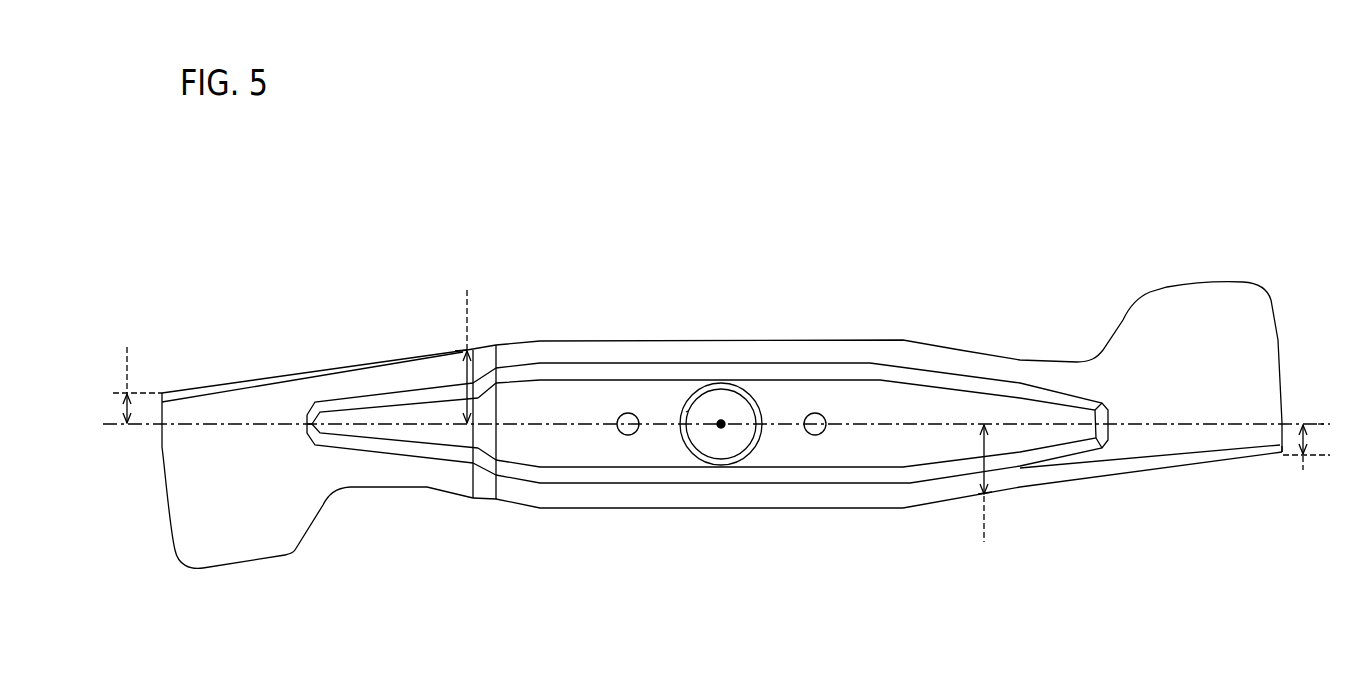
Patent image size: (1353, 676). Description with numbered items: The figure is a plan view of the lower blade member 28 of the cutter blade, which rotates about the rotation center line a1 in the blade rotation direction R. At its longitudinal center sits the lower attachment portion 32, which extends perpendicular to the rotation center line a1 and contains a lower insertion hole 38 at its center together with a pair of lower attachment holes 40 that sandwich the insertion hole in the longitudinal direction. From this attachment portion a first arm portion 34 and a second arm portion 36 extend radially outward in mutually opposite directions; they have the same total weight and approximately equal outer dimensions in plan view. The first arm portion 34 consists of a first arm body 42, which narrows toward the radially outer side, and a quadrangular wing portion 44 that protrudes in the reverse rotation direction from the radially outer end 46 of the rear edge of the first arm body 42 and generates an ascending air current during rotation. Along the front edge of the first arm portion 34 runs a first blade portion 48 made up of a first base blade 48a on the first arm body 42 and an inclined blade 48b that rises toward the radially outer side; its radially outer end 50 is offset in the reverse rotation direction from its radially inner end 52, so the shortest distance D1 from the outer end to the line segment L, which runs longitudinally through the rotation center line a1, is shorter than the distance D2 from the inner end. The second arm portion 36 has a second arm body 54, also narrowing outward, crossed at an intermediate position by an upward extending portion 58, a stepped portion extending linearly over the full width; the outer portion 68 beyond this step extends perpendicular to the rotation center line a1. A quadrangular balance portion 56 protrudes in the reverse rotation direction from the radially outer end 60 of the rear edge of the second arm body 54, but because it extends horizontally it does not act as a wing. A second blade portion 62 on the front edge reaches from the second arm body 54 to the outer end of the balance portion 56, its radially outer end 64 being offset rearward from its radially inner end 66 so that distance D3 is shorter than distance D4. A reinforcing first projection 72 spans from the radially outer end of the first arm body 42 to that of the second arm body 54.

The lower blade member 28 is at (232, 150).
The lower attachment portion 32 is at (817, 510).
The first arm portion 34 is at (945, 336).
The second arm portion 36 is at (427, 490).
The lower insertion hole 38 is at (695, 397).
The lower attachment holes 40 is at (627, 412).
The first arm body 42 is at (968, 488).
The wing portion 44 is at (1193, 310).
The radially outer end of rear edge portion of first arm body 46 is at (1113, 343).
The first blade portion 48 is at (1170, 470).
The first base blade 48a is at (1050, 487).
The inclined blade 48b is at (1223, 463).
The radially outer end of first blade portion 50 is at (1282, 452).
The radially inner end of first blade portion 52 is at (985, 495).
The second arm body 54 is at (515, 492).
The balance portion 56 is at (242, 553).
The upward extending portion 58 is at (488, 357).
The radially outer end of rear edge portion of second arm body 60 is at (330, 500).
The second blade portion 62 is at (273, 377).
The radially outer end of second blade portion 64 is at (162, 393).
The radially inner end of second blade portion 66 is at (465, 347).
The outer portion of second arm portion 68 is at (296, 559).
The first projection 72 is at (863, 400).
The rotation center line a1 is at (721, 428).
The rotation direction R is at (687, 412).
The line segment L is at (1320, 423).
The shortest distance between radially outer end of first blade portion and line seg D1 is at (1308, 462).
The shortest distance between radially inner end of first blade portion and line seg D2 is at (969, 485).
The shortest distance between radially outer end of second blade portion and line se D3 is at (130, 385).
The shortest distance between radially inner end of second blade portion and line se D4 is at (481, 356).